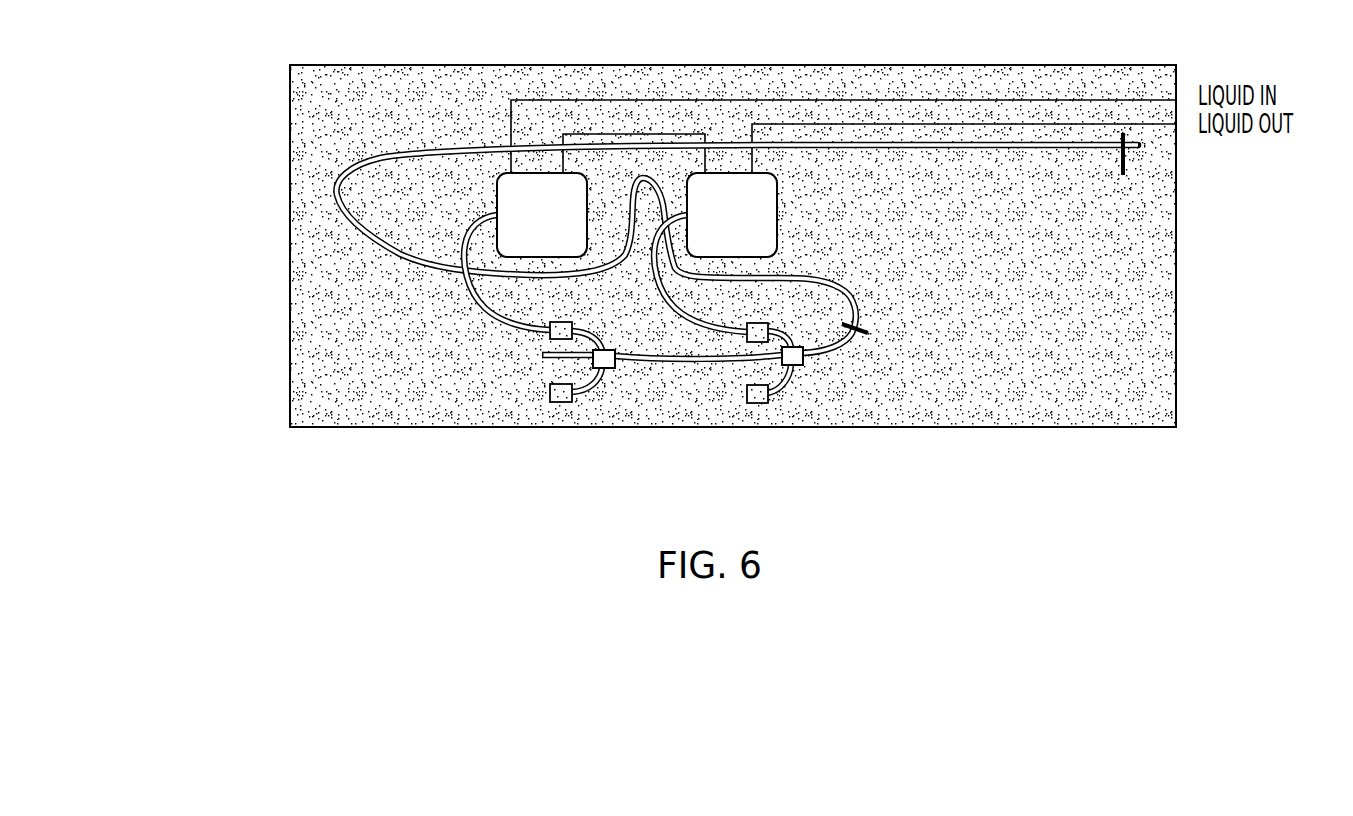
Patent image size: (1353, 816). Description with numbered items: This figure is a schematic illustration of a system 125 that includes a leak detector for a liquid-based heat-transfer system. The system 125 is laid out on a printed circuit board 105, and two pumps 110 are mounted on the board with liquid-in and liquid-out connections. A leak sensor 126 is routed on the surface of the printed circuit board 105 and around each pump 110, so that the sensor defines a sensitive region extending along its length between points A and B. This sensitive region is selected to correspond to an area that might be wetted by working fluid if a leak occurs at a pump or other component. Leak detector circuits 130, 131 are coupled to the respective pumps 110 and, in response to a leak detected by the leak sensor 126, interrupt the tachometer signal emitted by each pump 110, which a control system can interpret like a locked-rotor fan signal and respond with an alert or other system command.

The printed circuit board 105 is at (1132, 377).
The pump 110 is at (497, 194).
The system 125 is at (685, 286).
The leak sensor 126 is at (960, 150).
The leak detector circuit 130 is at (765, 403).
The leak detector circuit 131 is at (556, 402).